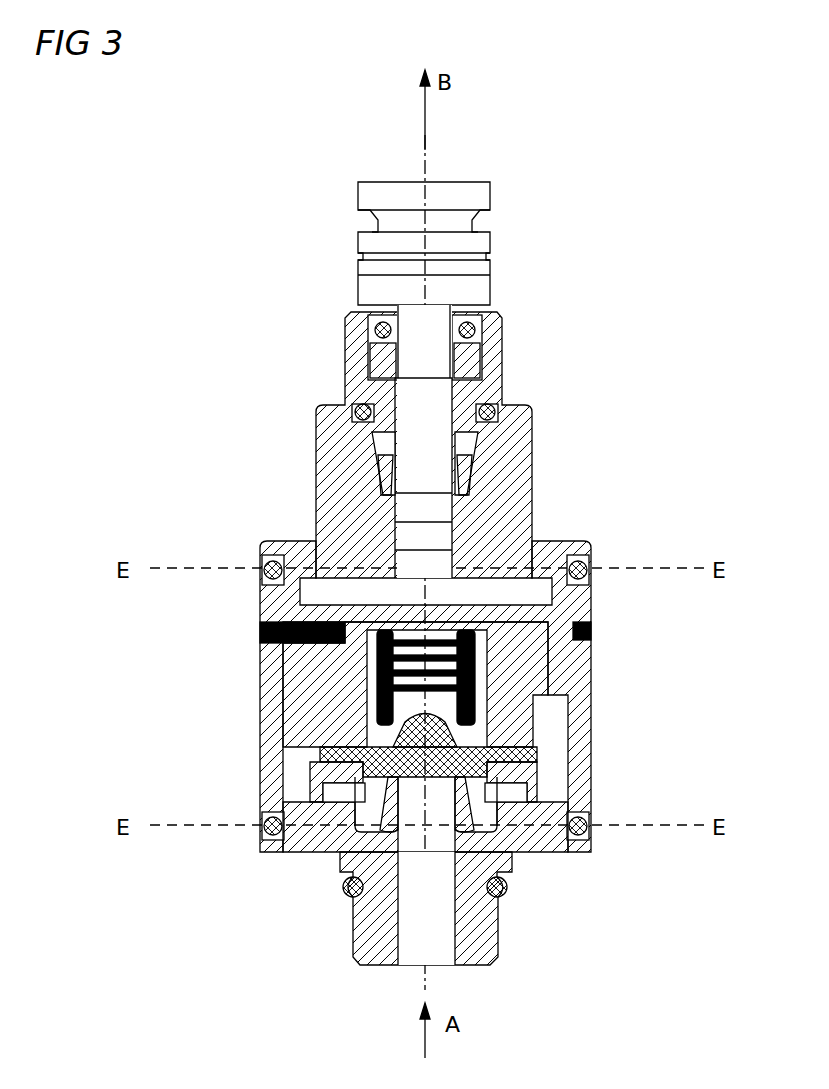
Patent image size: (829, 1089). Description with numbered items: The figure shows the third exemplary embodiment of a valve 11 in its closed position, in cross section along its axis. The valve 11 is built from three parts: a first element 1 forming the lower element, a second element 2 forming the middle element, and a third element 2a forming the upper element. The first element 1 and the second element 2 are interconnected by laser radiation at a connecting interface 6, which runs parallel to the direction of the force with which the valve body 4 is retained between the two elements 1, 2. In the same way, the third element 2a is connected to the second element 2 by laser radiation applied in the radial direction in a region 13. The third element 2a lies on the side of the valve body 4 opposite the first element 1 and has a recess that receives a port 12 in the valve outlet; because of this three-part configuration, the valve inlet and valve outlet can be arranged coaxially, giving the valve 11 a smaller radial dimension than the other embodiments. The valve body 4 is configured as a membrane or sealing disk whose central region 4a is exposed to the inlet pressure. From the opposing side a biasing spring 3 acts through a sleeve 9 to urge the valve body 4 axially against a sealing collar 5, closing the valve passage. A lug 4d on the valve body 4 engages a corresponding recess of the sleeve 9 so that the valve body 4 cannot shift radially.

The first element 1 is at (492, 955).
The second element 2 is at (585, 678).
The third element 2a is at (533, 487).
The biasing spring 3 is at (356, 690).
The valve body 4 is at (300, 766).
The central region 4a is at (455, 786).
The lug 4d is at (482, 690).
The sealing collar 5 is at (425, 795).
The connecting interface 6 is at (268, 840).
The sleeve 9 is at (345, 750).
The valve 11 is at (626, 266).
The port 12 is at (488, 285).
The region 13 is at (268, 553).